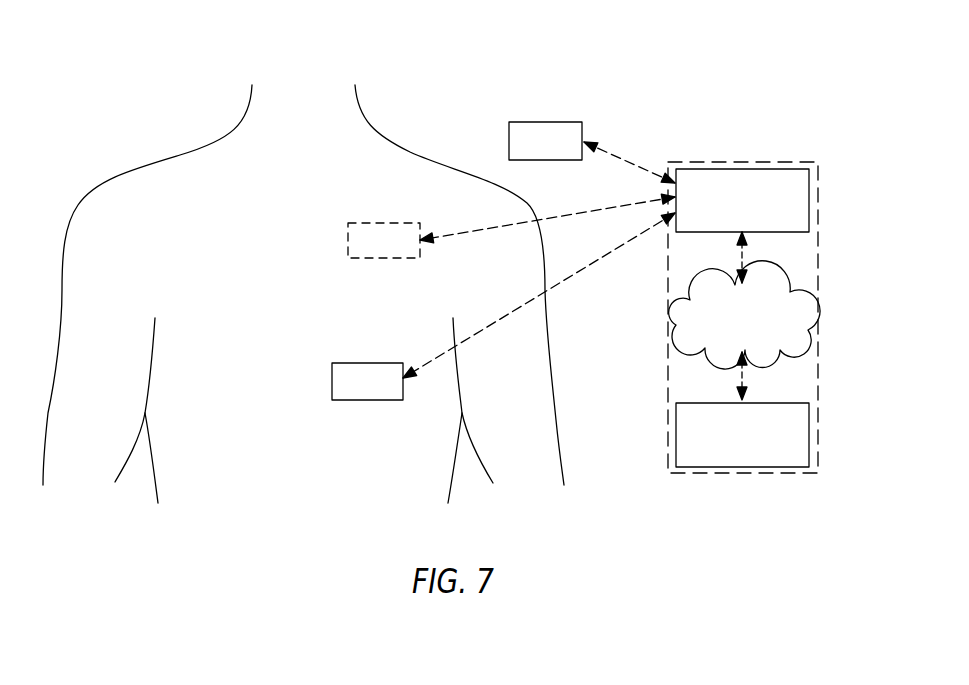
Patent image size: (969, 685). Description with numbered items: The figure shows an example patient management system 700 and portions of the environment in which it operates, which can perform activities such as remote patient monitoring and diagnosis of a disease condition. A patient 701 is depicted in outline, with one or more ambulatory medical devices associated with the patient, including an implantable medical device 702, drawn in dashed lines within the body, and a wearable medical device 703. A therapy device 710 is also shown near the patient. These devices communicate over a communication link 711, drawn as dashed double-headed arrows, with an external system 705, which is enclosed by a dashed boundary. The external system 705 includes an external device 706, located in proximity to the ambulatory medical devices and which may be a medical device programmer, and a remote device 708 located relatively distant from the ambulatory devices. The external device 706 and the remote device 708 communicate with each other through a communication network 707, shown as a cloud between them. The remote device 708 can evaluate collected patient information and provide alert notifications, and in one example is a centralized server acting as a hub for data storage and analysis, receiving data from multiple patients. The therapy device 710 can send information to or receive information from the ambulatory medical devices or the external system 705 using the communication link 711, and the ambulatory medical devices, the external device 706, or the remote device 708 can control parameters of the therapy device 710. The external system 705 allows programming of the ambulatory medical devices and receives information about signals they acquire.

The patient management system 700 is at (776, 48).
The patient 701 is at (392, 142).
The implantable medical device 702 is at (385, 222).
The wearable medical device 703 is at (362, 363).
The external system 705 is at (818, 240).
The external device 706 is at (809, 185).
The communication network 707 is at (805, 295).
The remote device 708 is at (809, 418).
The therapy device 710 is at (548, 122).
The communication link 711 is at (617, 160).